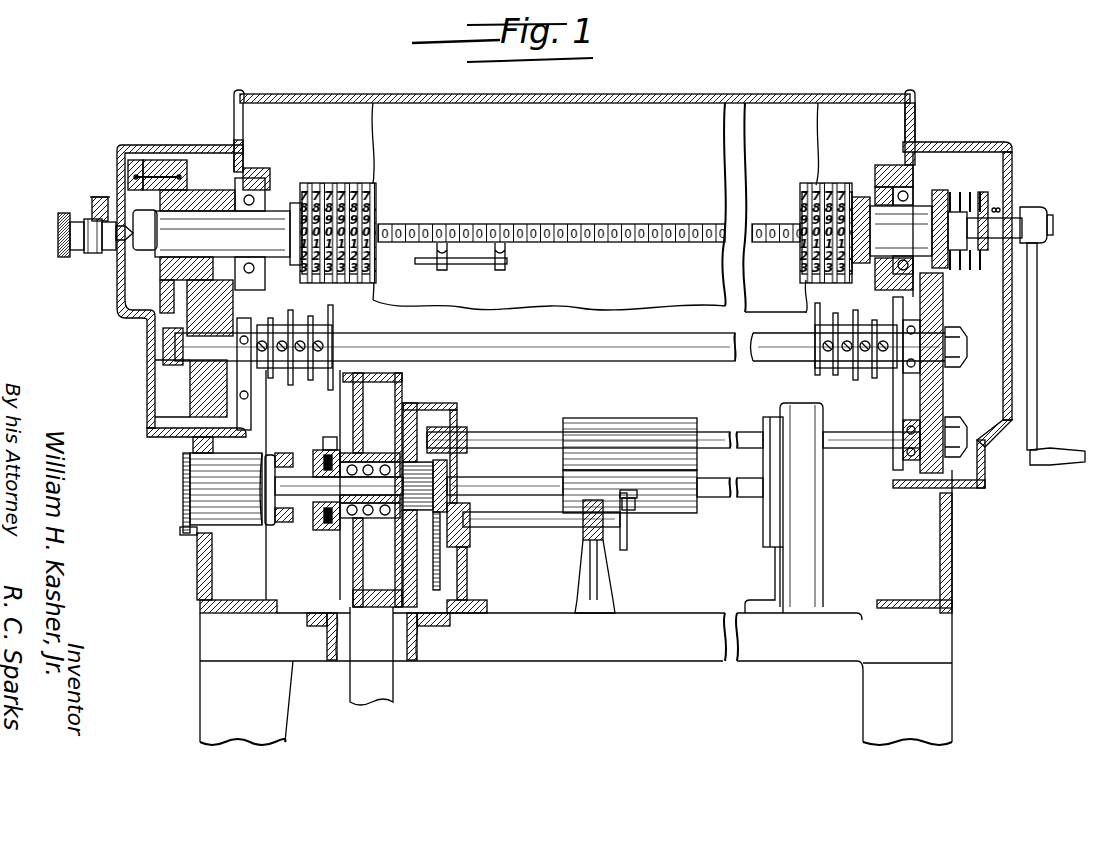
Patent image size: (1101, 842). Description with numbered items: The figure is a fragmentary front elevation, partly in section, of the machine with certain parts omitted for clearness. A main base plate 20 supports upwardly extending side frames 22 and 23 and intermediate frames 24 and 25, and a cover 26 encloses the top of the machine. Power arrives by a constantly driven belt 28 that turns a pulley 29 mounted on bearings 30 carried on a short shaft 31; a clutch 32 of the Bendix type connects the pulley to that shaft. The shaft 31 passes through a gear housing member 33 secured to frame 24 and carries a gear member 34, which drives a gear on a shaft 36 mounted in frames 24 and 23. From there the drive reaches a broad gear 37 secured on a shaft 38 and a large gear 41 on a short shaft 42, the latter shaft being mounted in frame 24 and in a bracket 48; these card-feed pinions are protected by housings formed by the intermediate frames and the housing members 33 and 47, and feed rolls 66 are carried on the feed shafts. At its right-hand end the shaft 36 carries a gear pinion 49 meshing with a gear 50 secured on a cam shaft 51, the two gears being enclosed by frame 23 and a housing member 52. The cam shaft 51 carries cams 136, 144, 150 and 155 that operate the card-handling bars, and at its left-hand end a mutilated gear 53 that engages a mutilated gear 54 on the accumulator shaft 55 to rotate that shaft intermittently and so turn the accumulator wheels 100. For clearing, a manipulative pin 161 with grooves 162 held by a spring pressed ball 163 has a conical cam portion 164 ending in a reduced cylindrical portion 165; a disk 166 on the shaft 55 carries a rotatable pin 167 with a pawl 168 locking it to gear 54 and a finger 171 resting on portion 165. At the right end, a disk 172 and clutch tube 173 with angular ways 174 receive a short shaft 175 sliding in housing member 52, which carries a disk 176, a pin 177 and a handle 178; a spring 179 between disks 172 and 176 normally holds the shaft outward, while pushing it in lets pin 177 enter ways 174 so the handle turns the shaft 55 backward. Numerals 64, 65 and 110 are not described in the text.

The main base plate 20 is at (432, 658).
The side frame 22 is at (200, 566).
The side frame 23 is at (952, 572).
The intermediate frame 24 is at (467, 588).
The intermediate frame 25 is at (785, 568).
The cover 26 is at (595, 208).
The belt 28 is at (371, 656).
The pulley 29 is at (352, 590).
The bearings 30 is at (395, 518).
The short shaft 31 is at (365, 478).
The clutch 32 is at (325, 527).
The gear housing member 33 is at (418, 403).
The gear member 34 is at (425, 486).
The shaft 36 is at (857, 448).
The broad gear 37 is at (458, 412).
The shaft 38 is at (492, 432).
The large gear 41 is at (440, 566).
The short shaft 42 is at (515, 527).
The housing member 47 is at (810, 530).
The bracket 48 is at (600, 592).
The gear pinion 49 is at (943, 422).
The gear 50 is at (943, 380).
The cam shaft 51 is at (555, 347).
The housing member 52 is at (985, 486).
The mutilated gear 53 is at (190, 392).
The mutilated gear 54 is at (200, 200).
The accumulator shaft 55 is at (532, 234).
The pin 64 is at (637, 507).
The arm 65 is at (627, 543).
The feed rolls 66 is at (605, 420).
The accumulator wheels 100 is at (845, 184).
The bearing block 110 is at (185, 278).
The cams 136 is at (271, 378).
The cams 144 is at (291, 310).
The cams 150 is at (310, 380).
The cams 155 is at (333, 314).
The manipulative pin 161 is at (58, 241).
The grooves 162 is at (78, 250).
The spring pressed ball 163 is at (90, 214).
The conical cam portion 164 is at (108, 262).
The reduced cylindrical portion 165 is at (128, 260).
The disk 166 is at (160, 298).
The rotatable pin 167 is at (150, 176).
The pawl 168 is at (180, 160).
The finger 171 is at (118, 162).
The disk 172 is at (948, 270).
The clutch tube 173 is at (958, 270).
The ways 174 is at (969, 268).
The short shaft 175 is at (1015, 222).
The disk 176 is at (993, 190).
The pin 177 is at (958, 192).
The handle 178 is at (1037, 410).
The spring 179 is at (978, 192).